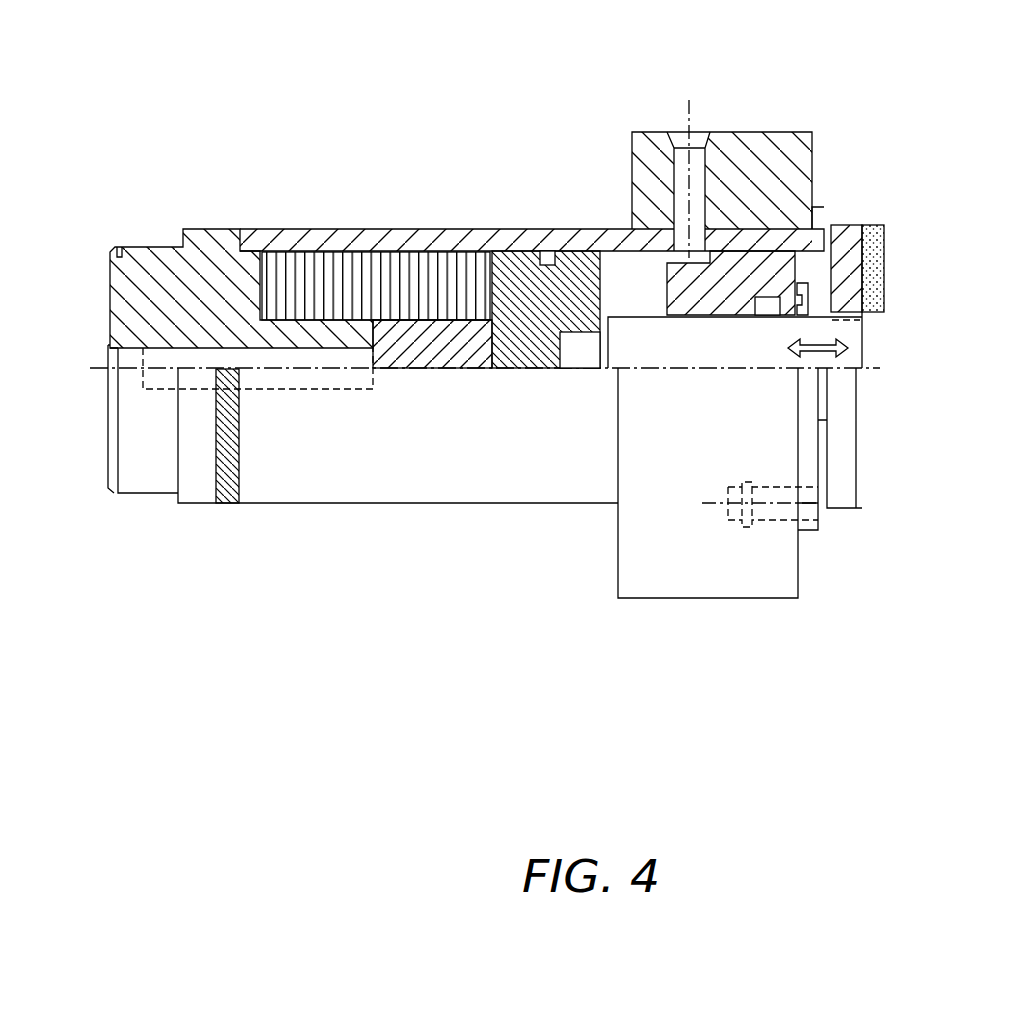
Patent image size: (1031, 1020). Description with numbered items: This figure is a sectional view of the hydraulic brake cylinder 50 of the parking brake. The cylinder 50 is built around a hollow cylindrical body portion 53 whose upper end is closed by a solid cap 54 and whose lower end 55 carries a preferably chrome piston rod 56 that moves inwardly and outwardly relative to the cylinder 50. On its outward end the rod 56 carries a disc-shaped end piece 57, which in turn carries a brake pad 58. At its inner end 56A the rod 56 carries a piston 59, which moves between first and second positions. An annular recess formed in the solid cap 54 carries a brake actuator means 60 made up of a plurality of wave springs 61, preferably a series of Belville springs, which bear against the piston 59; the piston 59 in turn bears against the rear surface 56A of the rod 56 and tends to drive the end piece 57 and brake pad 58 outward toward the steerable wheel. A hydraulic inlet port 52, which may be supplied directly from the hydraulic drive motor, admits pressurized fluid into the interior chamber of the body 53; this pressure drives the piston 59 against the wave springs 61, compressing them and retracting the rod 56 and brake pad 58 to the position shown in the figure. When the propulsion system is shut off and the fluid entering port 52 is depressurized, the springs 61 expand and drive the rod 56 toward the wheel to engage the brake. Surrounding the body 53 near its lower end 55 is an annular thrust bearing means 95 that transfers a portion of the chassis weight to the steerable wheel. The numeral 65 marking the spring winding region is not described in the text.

The hydraulic brake cylinder 50 is at (325, 229).
The hydraulic inlet port 52 is at (672, 130).
The hollow cylindrical body portion 53 is at (520, 230).
The solid cap 54 is at (198, 243).
The lower end of cylinder 55 is at (793, 300).
The piston rod 56 is at (823, 317).
The inner end of rod 56A is at (607, 350).
The disc-shaped end piece 57 is at (868, 312).
The brake pad 58 is at (883, 263).
The piston 59 is at (528, 368).
The brake actuator means 60 is at (428, 320).
The wave springs 61 is at (420, 320).
The coil winding 65 is at (260, 278).
The annular thrust bearing means 95 is at (647, 130).